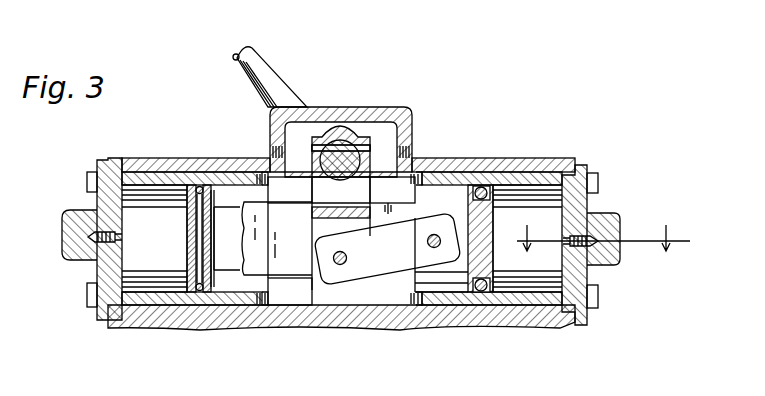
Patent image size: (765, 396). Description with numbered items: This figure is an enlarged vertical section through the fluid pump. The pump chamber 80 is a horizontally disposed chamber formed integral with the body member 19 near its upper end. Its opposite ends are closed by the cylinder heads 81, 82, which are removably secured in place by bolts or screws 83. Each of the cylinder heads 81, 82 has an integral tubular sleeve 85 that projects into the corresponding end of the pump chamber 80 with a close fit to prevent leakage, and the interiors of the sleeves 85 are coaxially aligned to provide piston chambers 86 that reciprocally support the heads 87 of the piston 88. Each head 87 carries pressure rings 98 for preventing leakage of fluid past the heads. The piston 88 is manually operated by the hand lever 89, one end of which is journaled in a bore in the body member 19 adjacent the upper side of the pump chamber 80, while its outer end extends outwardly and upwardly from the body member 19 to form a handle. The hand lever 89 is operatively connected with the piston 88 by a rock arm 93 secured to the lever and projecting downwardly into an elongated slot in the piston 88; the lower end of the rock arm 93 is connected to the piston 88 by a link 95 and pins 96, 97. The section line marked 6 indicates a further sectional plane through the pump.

The body member 19 is at (535, 325).
The pump chamber 80 is at (394, 188).
The cylinder head 81 is at (588, 207).
The cylinder head 82 is at (75, 260).
The bolts or screws 83 is at (88, 180).
The tubular sleeve 85 is at (167, 180).
The piston chamber 86 is at (137, 218).
The head 87 is at (193, 190).
The piston 88 is at (251, 212).
The hand lever 89 is at (337, 140).
The rock arm 93 is at (372, 168).
The link 95 is at (380, 266).
The pin 96 is at (340, 266).
The pin 97 is at (428, 245).
The pressure ring 98 is at (203, 193).
The section line 6- 6 is at (603, 249).